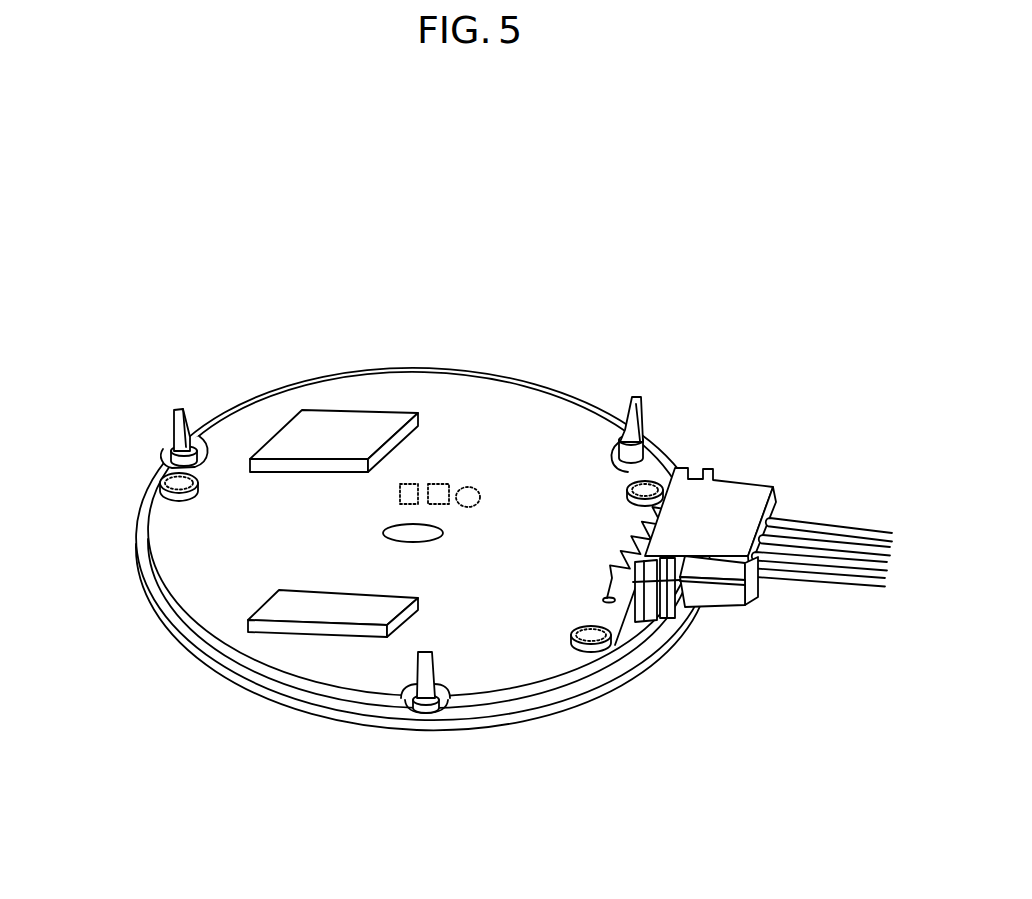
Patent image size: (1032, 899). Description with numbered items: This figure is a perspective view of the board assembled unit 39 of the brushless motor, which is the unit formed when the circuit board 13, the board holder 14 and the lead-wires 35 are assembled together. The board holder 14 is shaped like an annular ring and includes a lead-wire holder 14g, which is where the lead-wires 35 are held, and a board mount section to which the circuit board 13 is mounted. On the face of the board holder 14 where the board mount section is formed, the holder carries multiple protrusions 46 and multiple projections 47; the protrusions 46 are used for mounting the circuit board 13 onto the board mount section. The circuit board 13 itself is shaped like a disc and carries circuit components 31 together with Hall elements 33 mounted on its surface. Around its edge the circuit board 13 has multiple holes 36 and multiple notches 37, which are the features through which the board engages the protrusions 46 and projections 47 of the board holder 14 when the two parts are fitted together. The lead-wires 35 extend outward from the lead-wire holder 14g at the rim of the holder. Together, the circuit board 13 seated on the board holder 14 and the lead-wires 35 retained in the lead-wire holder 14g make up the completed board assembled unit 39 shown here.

The circuit board 13 is at (162, 553).
The board holder 14 is at (150, 600).
The lead-wire holder 14g is at (716, 600).
The circuit components 31 is at (303, 421).
The Hall elements 33 is at (410, 483).
The lead-wire 35 is at (835, 523).
The holes 36 is at (162, 472).
The notches 37 is at (170, 452).
The board assembled unit 39 is at (536, 382).
The protrusions 46 is at (167, 486).
The projections 47 is at (178, 408).